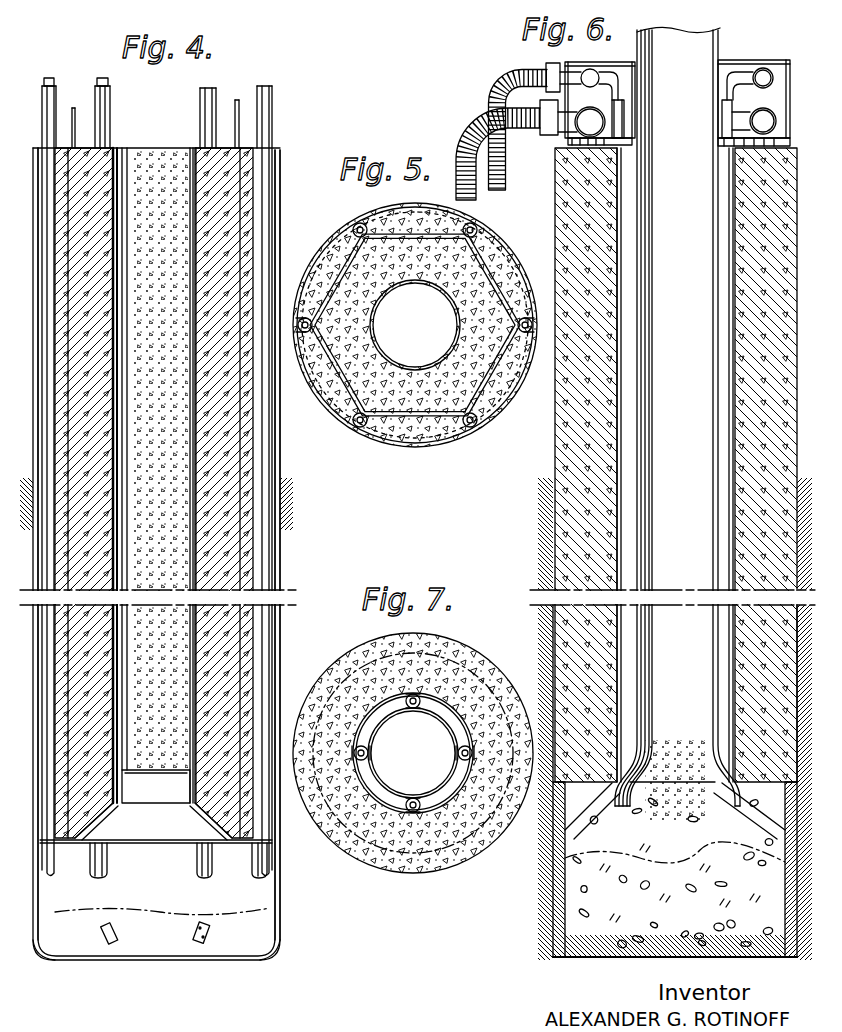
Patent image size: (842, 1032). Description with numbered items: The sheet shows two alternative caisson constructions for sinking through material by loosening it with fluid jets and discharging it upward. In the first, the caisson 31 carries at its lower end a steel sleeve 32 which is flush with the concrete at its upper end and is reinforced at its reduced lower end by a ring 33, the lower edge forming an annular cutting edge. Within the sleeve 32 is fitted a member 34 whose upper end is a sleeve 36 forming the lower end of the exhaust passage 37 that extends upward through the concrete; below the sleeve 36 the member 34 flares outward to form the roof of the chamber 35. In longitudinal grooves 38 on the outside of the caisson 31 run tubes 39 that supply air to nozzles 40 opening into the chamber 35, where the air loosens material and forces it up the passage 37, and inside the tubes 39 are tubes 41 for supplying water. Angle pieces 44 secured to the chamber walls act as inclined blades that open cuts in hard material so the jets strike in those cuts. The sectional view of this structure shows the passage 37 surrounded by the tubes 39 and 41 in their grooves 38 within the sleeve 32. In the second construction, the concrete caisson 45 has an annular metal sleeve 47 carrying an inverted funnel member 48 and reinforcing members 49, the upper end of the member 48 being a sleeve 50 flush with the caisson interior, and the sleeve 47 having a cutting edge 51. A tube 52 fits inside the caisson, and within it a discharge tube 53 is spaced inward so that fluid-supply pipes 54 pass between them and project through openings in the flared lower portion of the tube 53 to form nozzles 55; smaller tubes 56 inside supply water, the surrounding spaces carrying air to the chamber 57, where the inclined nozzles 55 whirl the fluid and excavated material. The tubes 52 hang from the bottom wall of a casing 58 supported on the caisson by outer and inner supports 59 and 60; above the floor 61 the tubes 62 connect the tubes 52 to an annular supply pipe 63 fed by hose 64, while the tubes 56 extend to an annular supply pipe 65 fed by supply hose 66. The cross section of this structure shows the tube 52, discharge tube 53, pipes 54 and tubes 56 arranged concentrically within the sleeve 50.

In FIG. 4, the caisson 31 is at (282, 438).
In FIG. 5, the caisson 31 is at (420, 452).
In FIG. 4, the steel sleeve 32 is at (274, 890).
In FIG. 4, the ring 33 is at (272, 950).
In FIG. 4, the member 34 is at (206, 812).
In FIG. 4, the chamber 35 is at (240, 908).
In FIG. 5, the chamber 35 is at (313, 262).
In FIG. 4, the sleeve 36 is at (191, 783).
In FIG. 5, the sleeve 36 is at (373, 328).
In FIG. 4, the exhaust passage 37 is at (154, 475).
In FIG. 5, the exhaust passage 37 is at (415, 325).
In FIG. 4, the longitudinal grooves 38 is at (279, 176).
In FIG. 5, the longitudinal grooves 38 is at (357, 430).
In FIG. 4, the tubes 39 is at (102, 126).
In FIG. 5, the tubes 39 is at (366, 426).
In FIG. 4, the nozzles 40 is at (190, 858).
In FIG. 4, the tubes 41 is at (100, 77).
In FIG. 5, the tubes 41 is at (355, 428).
In FIG. 4, the angle pieces 44 is at (108, 943).
In FIG. 7, the concrete caisson 45 is at (426, 882).
In FIG. 6, the concrete caisson 45 is at (548, 418).
In FIG. 6, the annular metal extension or sleeve 47 is at (553, 856).
In FIG. 6, the inverted funnel member 48 is at (603, 814).
In FIG. 7, the reinforcing members 49 is at (497, 700).
In FIG. 6, the reinforcing members 49 is at (562, 802).
In FIG. 7, the sleeve 50 is at (436, 682).
In FIG. 6, the sleeve 50 is at (606, 733).
In FIG. 6, the cutting edge 51 is at (556, 955).
In FIG. 6, the tube 52 is at (732, 476).
In FIG. 7, the discharge tube 53 is at (441, 712).
In FIG. 6, the discharge tube 53 is at (714, 528).
In FIG. 7, the fluid-supply pipes 54 is at (398, 716).
In FIG. 6, the fluid-supply pipes 54 is at (722, 428).
In FIG. 6, the nozzles 55 is at (636, 798).
In FIG. 7, the smaller tubes 56 is at (377, 757).
In FIG. 6, the smaller tubes 56 is at (622, 96).
In FIG. 6, the chamber 57 is at (590, 878).
In FIG. 6, the casing 58 is at (788, 62).
In FIG. 6, the outer support 59 is at (790, 136).
In FIG. 6, the inner support 60 is at (737, 150).
In FIG. 6, the floor 61 is at (600, 140).
In FIG. 6, the tubes 62 is at (612, 96).
In FIG. 6, the annular supply pipe 63 is at (575, 122).
In FIG. 6, the hose 64 is at (470, 148).
In FIG. 6, the annular supply pipe 65 is at (586, 66).
In FIG. 6, the supply hose 66 is at (522, 86).